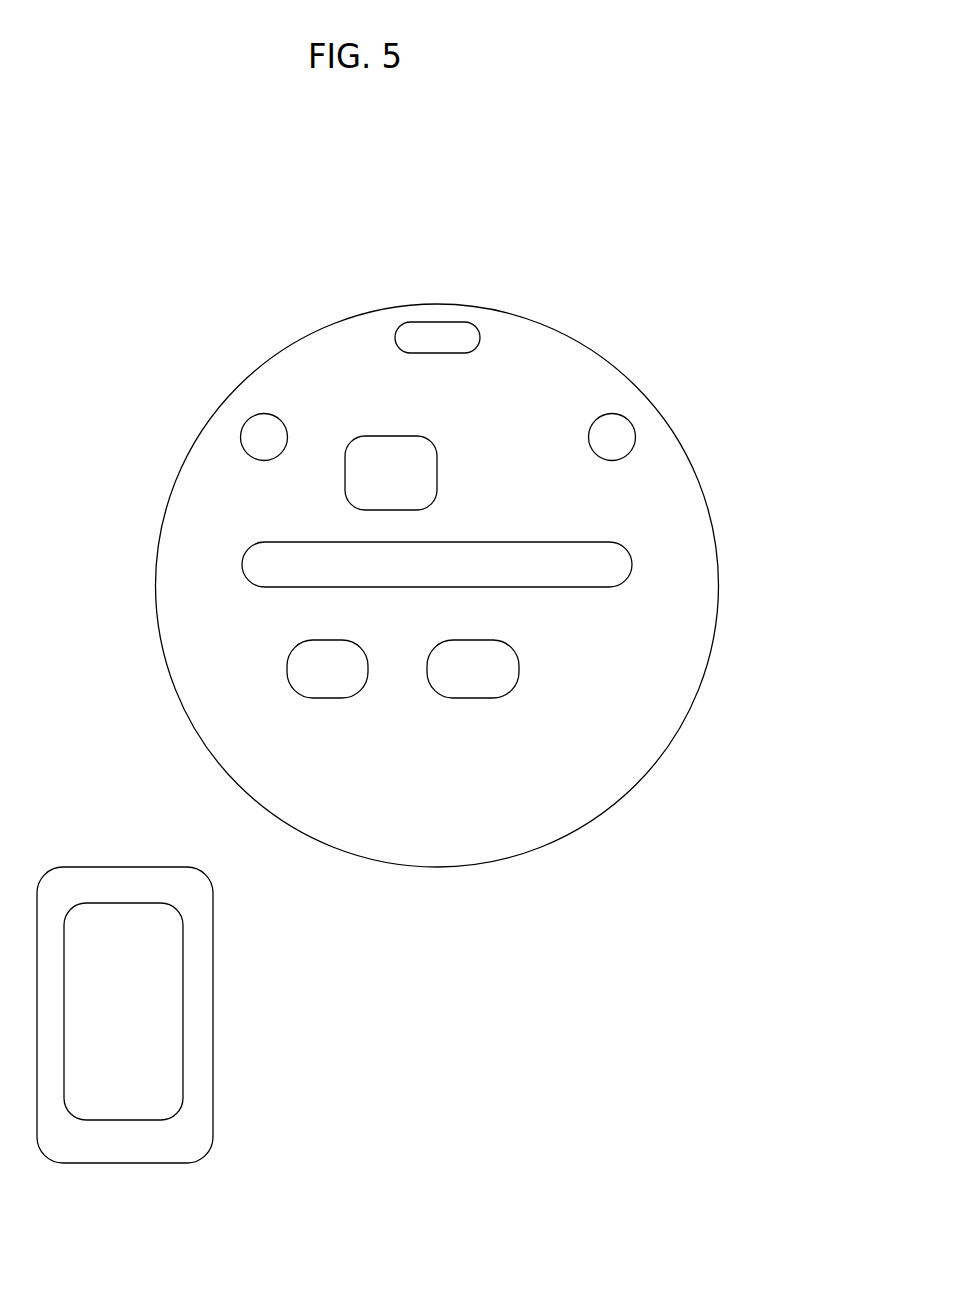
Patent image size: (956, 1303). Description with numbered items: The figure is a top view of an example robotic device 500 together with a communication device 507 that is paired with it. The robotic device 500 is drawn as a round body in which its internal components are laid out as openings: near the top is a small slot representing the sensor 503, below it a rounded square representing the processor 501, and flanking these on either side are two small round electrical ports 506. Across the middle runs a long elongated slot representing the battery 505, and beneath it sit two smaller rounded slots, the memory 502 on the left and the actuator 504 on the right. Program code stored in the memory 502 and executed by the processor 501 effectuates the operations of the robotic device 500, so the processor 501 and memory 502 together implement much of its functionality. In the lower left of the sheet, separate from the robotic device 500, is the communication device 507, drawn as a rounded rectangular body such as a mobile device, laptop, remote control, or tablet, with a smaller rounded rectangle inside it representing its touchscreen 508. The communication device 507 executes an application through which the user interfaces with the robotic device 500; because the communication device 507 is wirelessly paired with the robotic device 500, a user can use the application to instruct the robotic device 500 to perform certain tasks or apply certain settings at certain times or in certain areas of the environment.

The robotic device 500 is at (277, 349).
The processor 501 is at (437, 467).
The memory 502 is at (288, 670).
The sensor 503 is at (461, 322).
The actuator 504 is at (519, 673).
The battery 505 is at (613, 590).
The electrical ports 506 is at (240, 435).
The communication device 507 is at (213, 1042).
The touchscreen 508 is at (160, 977).